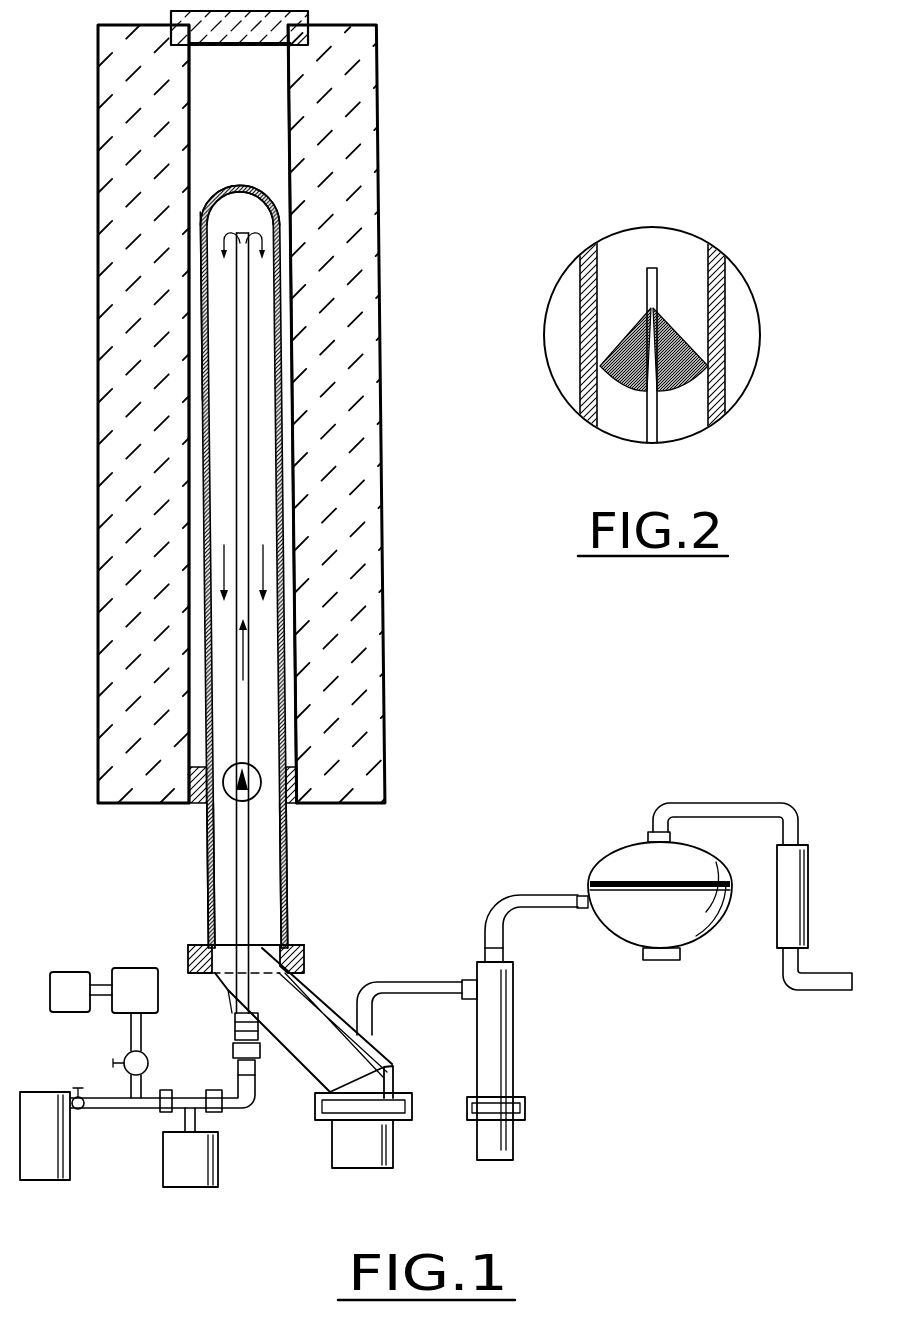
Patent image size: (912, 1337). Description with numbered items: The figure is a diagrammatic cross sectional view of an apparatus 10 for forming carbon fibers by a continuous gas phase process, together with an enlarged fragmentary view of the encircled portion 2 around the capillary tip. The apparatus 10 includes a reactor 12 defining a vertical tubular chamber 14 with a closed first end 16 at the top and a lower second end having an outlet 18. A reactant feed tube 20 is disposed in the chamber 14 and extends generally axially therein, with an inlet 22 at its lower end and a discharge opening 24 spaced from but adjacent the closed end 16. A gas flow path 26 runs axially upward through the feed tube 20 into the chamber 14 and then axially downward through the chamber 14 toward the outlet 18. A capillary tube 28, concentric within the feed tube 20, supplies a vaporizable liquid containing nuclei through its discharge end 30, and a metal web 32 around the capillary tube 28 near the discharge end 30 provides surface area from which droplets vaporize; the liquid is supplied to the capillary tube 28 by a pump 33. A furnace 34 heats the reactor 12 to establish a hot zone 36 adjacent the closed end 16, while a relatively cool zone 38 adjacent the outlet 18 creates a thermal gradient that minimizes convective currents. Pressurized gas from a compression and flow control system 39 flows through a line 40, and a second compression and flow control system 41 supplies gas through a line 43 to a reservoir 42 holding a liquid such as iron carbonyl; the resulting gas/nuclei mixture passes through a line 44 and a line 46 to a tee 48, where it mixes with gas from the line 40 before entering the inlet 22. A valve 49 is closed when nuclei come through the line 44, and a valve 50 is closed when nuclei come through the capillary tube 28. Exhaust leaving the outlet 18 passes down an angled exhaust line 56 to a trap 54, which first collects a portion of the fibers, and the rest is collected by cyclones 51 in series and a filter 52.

In FIG. 1, the detail circle of FIG. 2 is at (257, 798).
In FIG. 1, the apparatus 10 is at (310, 1188).
In FIG. 1, the reactor 12 is at (282, 286).
In FIG. 1, the chamber 14 is at (260, 330).
In FIG. 2, the chamber 14 is at (740, 278).
In FIG. 1, the first end 16 is at (272, 180).
In FIG. 1, the outlet 18 is at (288, 903).
In FIG. 1, the reactant feed tube 20 is at (255, 864).
In FIG. 2, the reactant feed tube 20 is at (720, 320).
In FIG. 1, the inlet 22 is at (212, 888).
In FIG. 1, the discharge opening 24 is at (236, 238).
In FIG. 1, the gas flow path 26 is at (240, 645).
In FIG. 1, the capillary tube 28 is at (240, 836).
In FIG. 2, the capillary tube 28 is at (660, 415).
In FIG. 1, the discharge end 30 is at (255, 766).
In FIG. 2, the discharge end 30 is at (655, 275).
In FIG. 2, the web 32 is at (600, 362).
In FIG. 1, the pump 33 is at (50, 1182).
In FIG. 1, the furnace 34 is at (98, 357).
In FIG. 1, the hot zone 36 is at (200, 212).
In FIG. 1, the cool zone 38 is at (205, 678).
In FIG. 1, the compression and flow control system 39 is at (200, 1188).
In FIG. 1, the line 40 is at (180, 1120).
In FIG. 1, the compression and flow control system 41 is at (62, 972).
In FIG. 1, the reservoir 42 is at (140, 968).
In FIG. 1, the line 43 is at (97, 985).
In FIG. 1, the line 44 is at (131, 1035).
In FIG. 1, the line 46 is at (150, 1096).
In FIG. 1, the tee 48 is at (195, 1097).
In FIG. 1, the valve 49 is at (76, 1097).
In FIG. 1, the valve 50 is at (147, 1058).
In FIG. 1, the cyclone 51 is at (648, 838).
In FIG. 1, the filter 52 is at (810, 893).
In FIG. 1, the trap 54 is at (412, 1112).
In FIG. 1, the angled exhaust line 56 is at (432, 1062).